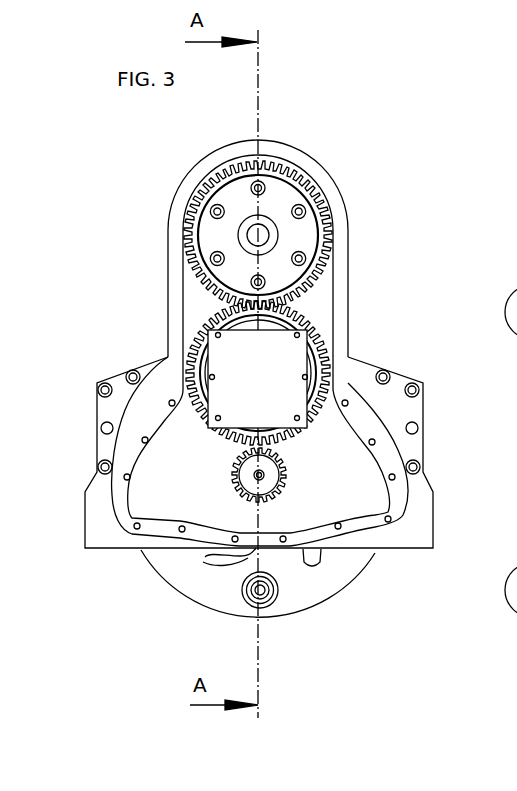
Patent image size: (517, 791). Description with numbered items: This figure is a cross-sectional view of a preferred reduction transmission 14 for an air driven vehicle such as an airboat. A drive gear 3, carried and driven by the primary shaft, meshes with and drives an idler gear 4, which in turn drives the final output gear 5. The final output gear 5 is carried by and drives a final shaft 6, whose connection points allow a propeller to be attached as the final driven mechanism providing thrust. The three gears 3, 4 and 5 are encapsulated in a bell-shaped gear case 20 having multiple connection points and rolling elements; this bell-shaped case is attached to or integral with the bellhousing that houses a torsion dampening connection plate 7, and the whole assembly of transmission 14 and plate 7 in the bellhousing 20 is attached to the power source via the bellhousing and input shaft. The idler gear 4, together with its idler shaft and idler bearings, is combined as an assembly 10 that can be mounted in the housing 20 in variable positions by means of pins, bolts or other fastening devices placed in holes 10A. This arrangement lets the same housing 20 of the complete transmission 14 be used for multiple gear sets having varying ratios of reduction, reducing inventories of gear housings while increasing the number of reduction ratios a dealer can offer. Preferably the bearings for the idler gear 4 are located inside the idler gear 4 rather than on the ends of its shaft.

The drive gear 3 is at (289, 501).
The idler gear 4 is at (360, 349).
The final output gear 5 is at (313, 182).
The final shaft 6 is at (273, 213).
The torsion dampening connection plate 7 is at (298, 590).
The idler assembly 10 is at (335, 361).
The holes 10A is at (299, 333).
The reduction transmission 14 is at (162, 277).
The bell-shaped gear case 20 is at (172, 222).